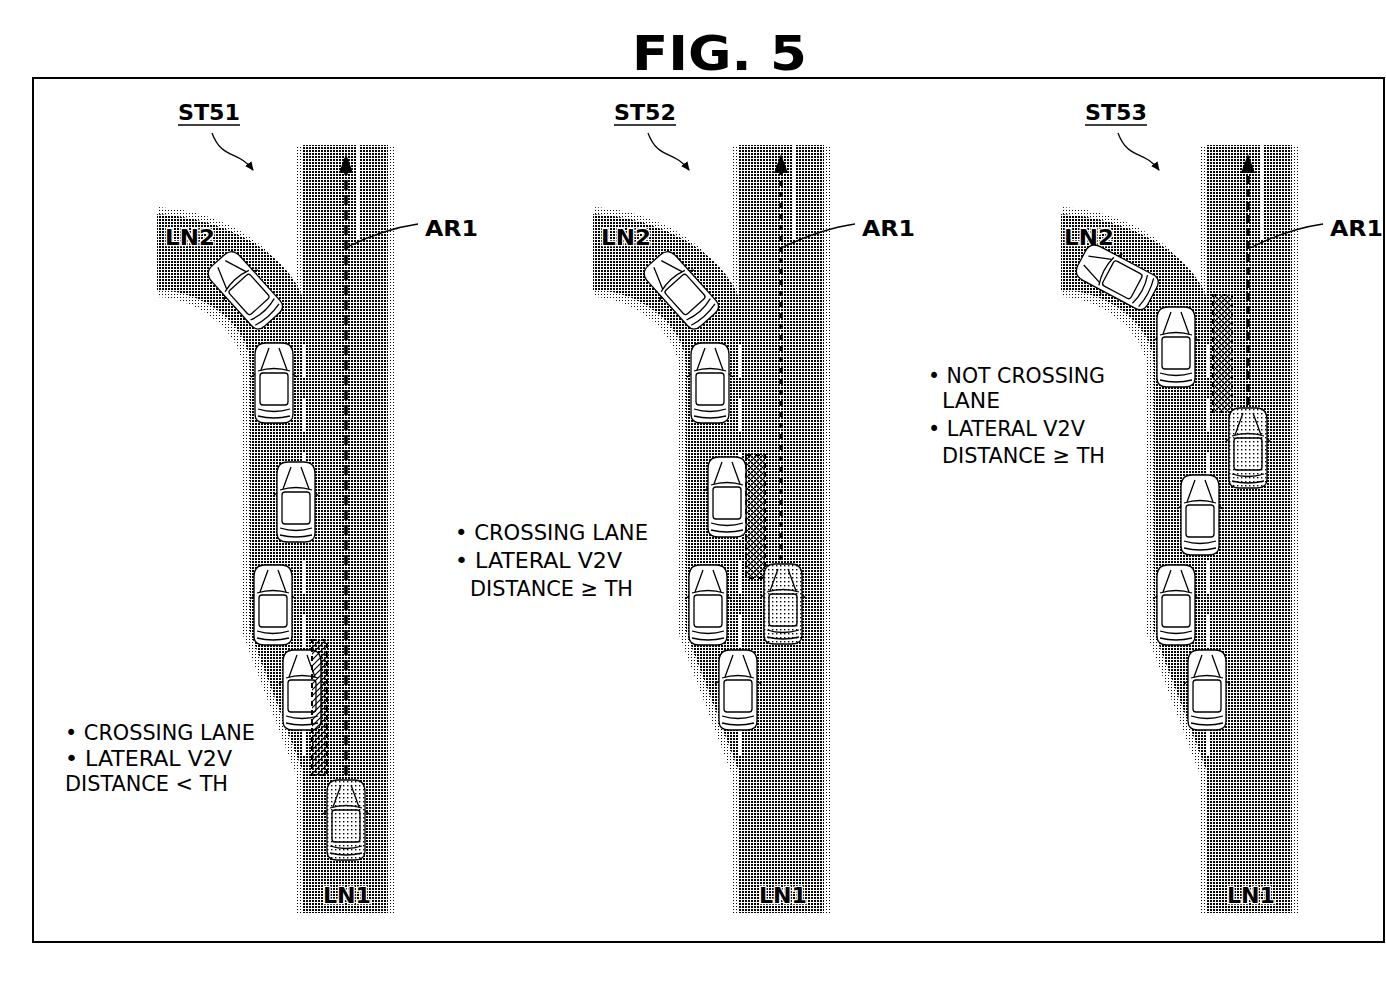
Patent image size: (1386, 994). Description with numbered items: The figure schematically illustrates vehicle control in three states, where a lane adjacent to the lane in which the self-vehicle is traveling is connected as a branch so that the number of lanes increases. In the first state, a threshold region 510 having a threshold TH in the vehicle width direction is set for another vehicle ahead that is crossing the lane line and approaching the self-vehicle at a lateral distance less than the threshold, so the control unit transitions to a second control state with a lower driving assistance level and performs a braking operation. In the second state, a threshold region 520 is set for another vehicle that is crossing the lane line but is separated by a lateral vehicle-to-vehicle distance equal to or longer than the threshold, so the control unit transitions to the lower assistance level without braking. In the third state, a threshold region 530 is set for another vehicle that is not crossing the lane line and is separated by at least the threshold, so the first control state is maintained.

The threshold region 510 is at (330, 748).
The threshold region 520 is at (768, 535).
The threshold region 530 is at (1232, 362).